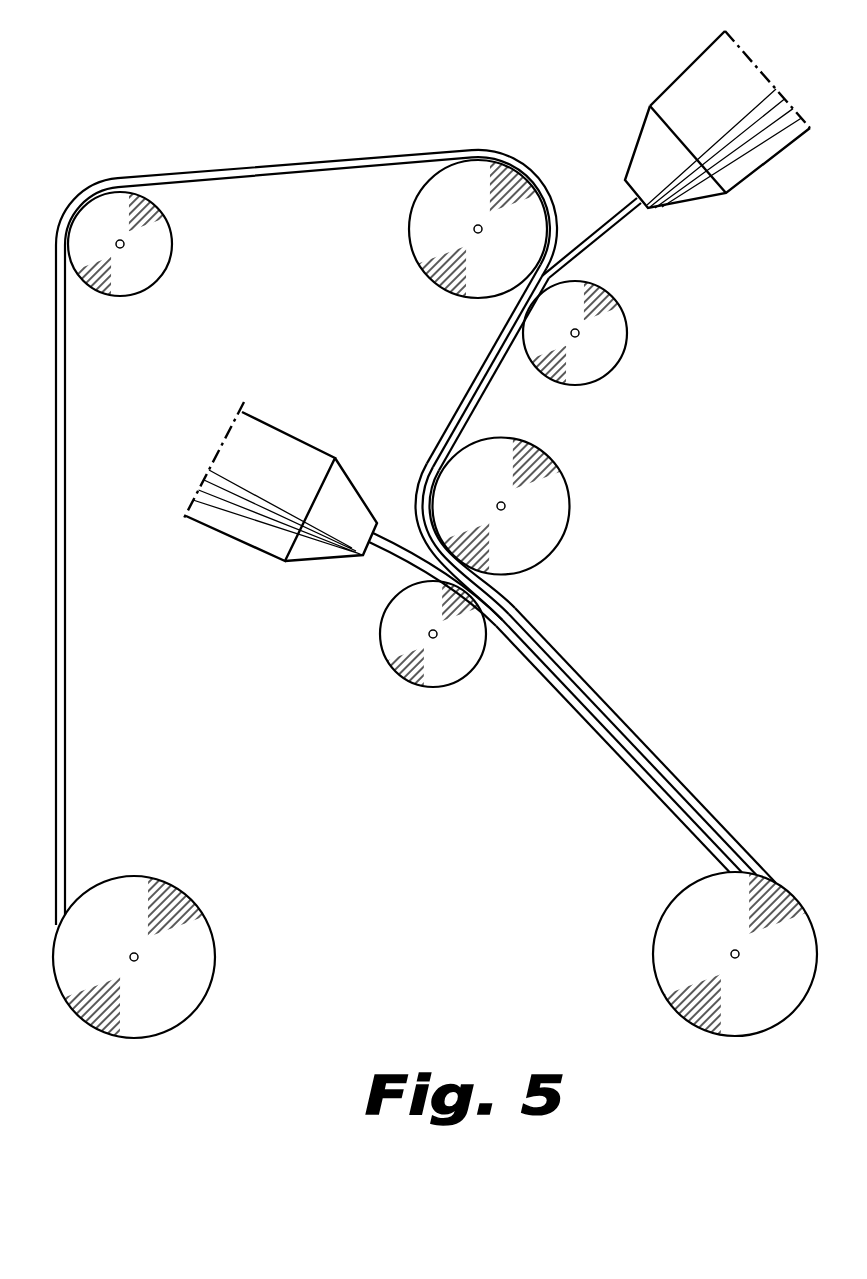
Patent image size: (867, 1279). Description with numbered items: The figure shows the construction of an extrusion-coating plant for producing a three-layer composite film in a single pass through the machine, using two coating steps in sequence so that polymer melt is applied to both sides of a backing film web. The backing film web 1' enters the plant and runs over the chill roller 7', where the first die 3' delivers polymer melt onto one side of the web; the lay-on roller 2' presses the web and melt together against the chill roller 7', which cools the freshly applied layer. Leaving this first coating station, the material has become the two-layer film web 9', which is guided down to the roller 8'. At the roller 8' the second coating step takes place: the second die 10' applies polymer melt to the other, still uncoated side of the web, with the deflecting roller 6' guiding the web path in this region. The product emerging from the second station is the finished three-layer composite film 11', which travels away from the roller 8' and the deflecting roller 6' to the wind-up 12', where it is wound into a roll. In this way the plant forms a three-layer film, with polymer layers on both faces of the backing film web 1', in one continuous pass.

The backing film web 1' is at (306, 537).
The lay-on roller 2' is at (604, 333).
The die 3' is at (717, 119).
The deflecting roller 6' is at (441, 653).
The chill roller 7' is at (447, 229).
The roller 8' is at (527, 506).
The two-layer film web 9' is at (461, 368).
The die 10' is at (280, 504).
The finished 3-layer composite film 11' is at (637, 745).
The wind-up 12' is at (697, 954).